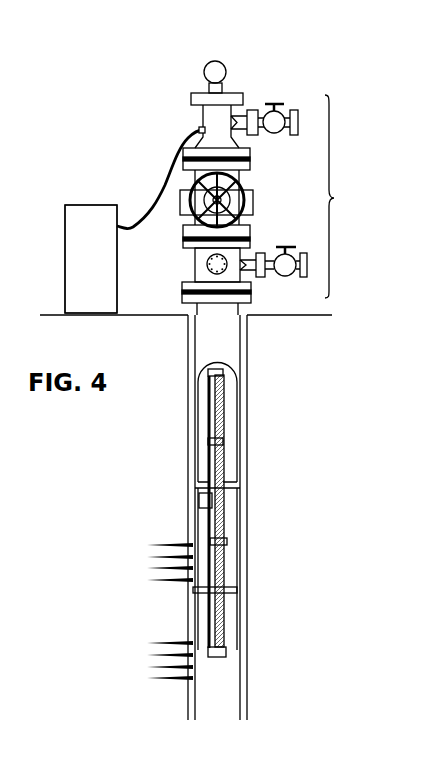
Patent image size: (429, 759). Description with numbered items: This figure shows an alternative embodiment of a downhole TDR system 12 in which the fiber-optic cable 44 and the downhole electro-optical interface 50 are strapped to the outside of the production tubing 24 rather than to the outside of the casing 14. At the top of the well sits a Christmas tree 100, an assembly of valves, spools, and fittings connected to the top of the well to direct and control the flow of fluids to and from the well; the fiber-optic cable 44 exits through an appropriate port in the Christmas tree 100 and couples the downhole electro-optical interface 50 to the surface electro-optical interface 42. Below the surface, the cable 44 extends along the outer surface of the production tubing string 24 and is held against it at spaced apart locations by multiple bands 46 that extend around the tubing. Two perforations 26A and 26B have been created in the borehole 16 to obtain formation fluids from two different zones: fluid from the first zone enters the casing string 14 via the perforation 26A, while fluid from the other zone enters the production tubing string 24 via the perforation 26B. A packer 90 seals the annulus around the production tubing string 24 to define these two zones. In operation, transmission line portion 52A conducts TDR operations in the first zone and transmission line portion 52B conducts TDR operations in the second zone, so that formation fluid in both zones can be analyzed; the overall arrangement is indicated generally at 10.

The well system 10 is at (253, 53).
The downhole TDR system 12 is at (108, 172).
The casing 14 is at (241, 358).
The borehole 16 is at (163, 291).
The production tubing 24 is at (221, 567).
The perforation 26A is at (137, 535).
The perforation 26B is at (137, 637).
The surface electro-optical interface 42 is at (69, 280).
The fiber-optic cable 44 is at (163, 185).
The bands 46 is at (223, 443).
The downhole electro-optical interface 50 is at (198, 497).
The transmission line portion 52A is at (208, 548).
The transmission line portion 52B is at (207, 628).
The packer 90 is at (232, 595).
The Christmas tree 100 is at (277, 152).